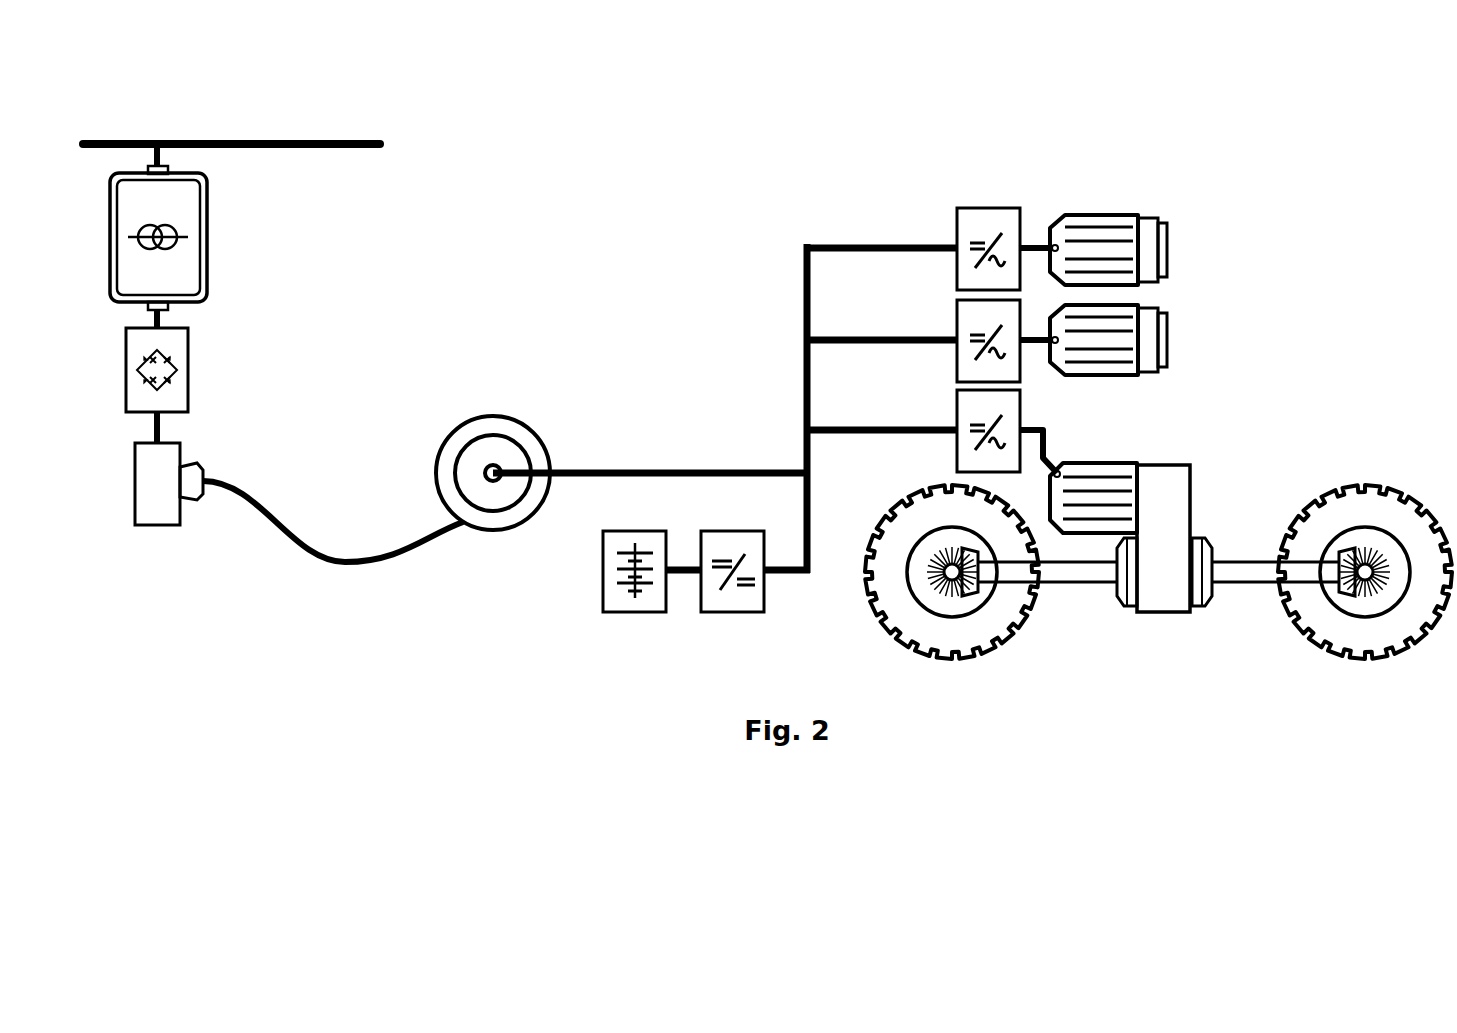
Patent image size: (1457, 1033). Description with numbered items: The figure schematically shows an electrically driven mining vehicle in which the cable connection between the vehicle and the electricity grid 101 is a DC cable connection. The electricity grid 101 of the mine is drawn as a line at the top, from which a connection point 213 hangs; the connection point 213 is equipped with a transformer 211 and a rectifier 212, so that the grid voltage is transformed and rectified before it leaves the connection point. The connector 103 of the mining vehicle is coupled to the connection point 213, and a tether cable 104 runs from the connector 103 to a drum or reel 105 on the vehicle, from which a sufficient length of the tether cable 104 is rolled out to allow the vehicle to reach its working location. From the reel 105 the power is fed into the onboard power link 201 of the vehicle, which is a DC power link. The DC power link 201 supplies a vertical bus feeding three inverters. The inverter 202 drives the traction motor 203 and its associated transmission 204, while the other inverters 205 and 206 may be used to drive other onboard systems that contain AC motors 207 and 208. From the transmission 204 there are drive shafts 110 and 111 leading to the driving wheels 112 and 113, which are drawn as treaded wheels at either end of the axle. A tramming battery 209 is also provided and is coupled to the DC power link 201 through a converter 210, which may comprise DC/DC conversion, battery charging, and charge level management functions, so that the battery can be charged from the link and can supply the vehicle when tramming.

The electricity grid 101 is at (290, 138).
The transformer 211 is at (207, 217).
The rectifier 212 is at (190, 347).
The connection point 213 is at (177, 438).
The connector 103 is at (193, 500).
The tether cable 104 is at (347, 557).
The reel 105 is at (495, 425).
The onboard power link 201 is at (652, 468).
The tramming battery 209 is at (612, 612).
The converter 210 is at (717, 612).
The inverter 206 is at (957, 222).
The inverter 205 is at (957, 312).
The inverter 202 is at (957, 402).
The AC motor 208 is at (1137, 215).
The AC motor 207 is at (1137, 305).
The traction motor 203 is at (1107, 462).
The transmission 204 is at (1192, 487).
The drive shaft 110 is at (1070, 584).
The drive shaft 111 is at (1268, 585).
The driving wheel 112 is at (973, 643).
The driving wheel 113 is at (1345, 645).